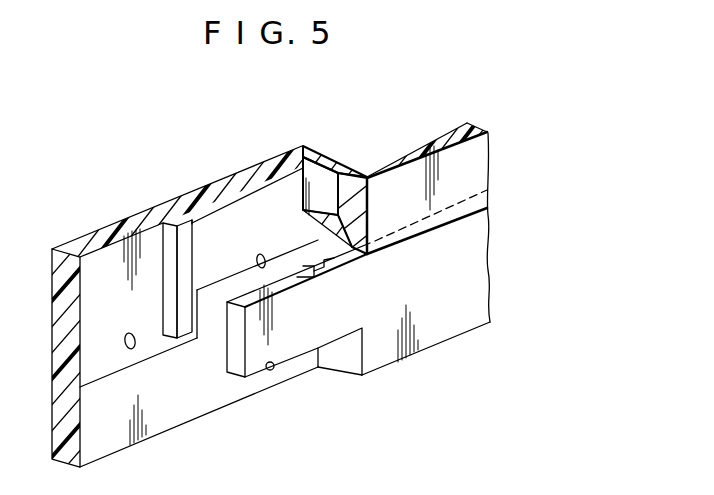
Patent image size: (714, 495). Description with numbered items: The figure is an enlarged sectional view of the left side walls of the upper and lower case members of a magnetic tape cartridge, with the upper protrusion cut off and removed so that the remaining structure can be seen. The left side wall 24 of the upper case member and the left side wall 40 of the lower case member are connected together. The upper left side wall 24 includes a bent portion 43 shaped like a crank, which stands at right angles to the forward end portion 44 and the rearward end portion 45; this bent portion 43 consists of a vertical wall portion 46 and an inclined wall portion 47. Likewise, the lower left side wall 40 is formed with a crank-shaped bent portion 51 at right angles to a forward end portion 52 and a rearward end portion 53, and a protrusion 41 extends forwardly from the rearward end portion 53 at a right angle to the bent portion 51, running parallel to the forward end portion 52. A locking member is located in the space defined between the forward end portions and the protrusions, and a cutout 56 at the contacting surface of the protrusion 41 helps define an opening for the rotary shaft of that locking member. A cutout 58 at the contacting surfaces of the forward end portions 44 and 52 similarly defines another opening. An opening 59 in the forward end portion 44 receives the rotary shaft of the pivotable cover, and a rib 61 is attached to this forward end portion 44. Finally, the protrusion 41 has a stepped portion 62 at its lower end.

The left side wall of the upper case member 24 is at (478, 157).
The left side wall of the lower case member 40 is at (480, 277).
The protrusion 41 is at (240, 345).
The bent portion 43 is at (325, 160).
The forward end portion 44 is at (218, 180).
The rearward end portion 45 is at (408, 158).
The vertical wall portion 46 is at (314, 148).
The inclined wall portion 47 is at (314, 228).
The bent portion 51 is at (343, 360).
The forward end portion 52 is at (216, 404).
The rearward end portion 53 is at (400, 357).
The cutout 56 is at (318, 266).
The cutout 58 is at (257, 256).
The opening 59 is at (125, 336).
The rib 61 is at (165, 246).
The stepped portion 62 is at (268, 364).